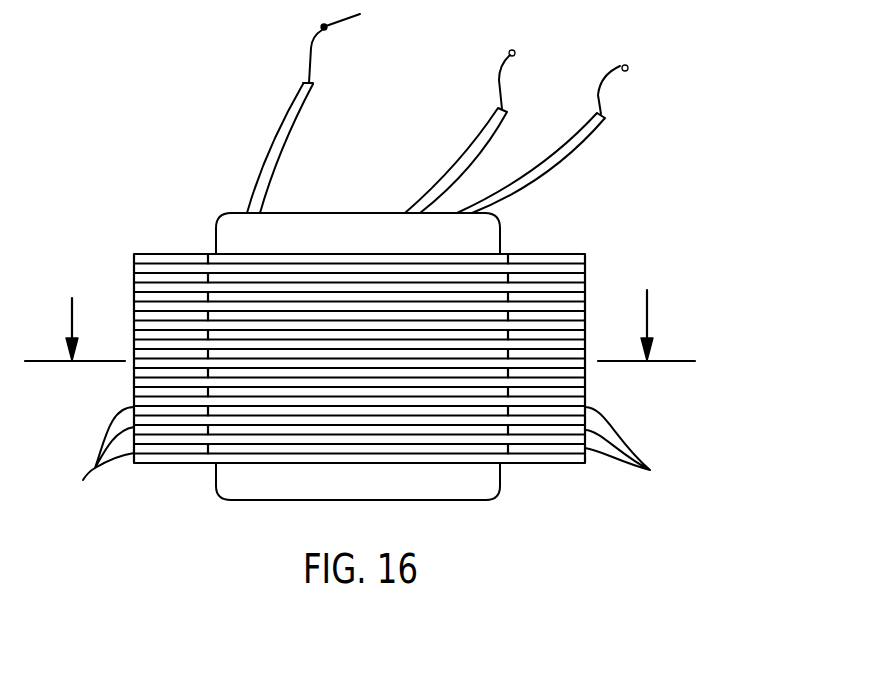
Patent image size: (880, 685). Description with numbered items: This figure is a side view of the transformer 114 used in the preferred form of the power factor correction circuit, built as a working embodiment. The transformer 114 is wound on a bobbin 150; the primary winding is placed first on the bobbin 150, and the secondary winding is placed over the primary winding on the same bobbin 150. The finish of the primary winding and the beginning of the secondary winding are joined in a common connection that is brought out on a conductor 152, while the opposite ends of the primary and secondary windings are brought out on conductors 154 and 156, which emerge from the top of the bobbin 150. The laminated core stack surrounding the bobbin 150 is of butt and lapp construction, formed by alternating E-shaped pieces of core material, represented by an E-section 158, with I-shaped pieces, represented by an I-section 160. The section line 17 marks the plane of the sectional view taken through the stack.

The transformer 114 is at (645, 262).
The bobbin 150 is at (489, 482).
The conductor 152 is at (305, 126).
The conductor 154 is at (465, 150).
The conductor 156 is at (562, 162).
The E-section 158 is at (646, 449).
The I-section 160 is at (92, 465).
The section line 17- 17 is at (362, 325).